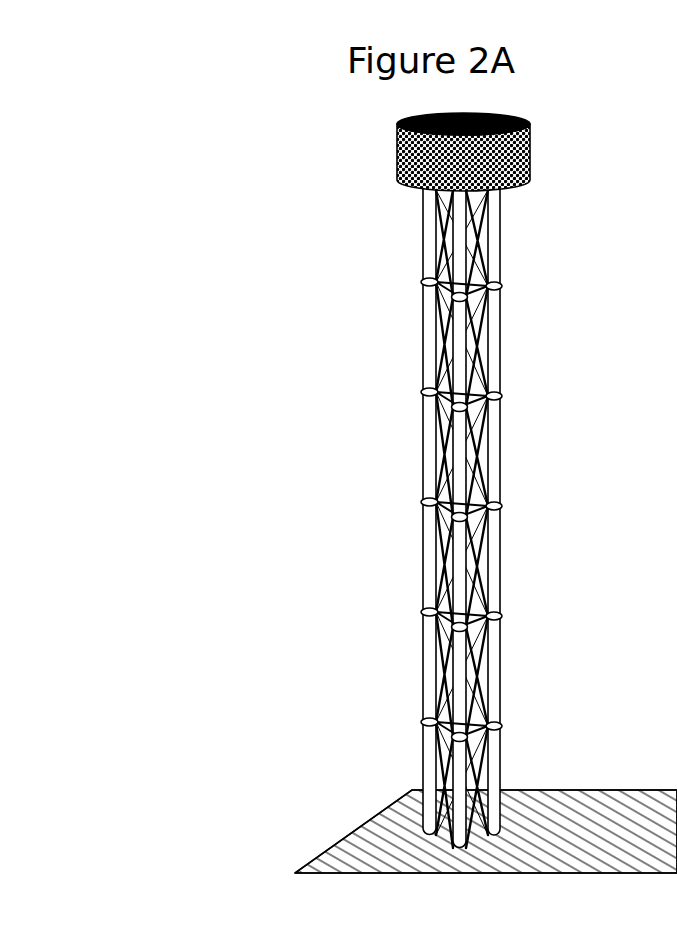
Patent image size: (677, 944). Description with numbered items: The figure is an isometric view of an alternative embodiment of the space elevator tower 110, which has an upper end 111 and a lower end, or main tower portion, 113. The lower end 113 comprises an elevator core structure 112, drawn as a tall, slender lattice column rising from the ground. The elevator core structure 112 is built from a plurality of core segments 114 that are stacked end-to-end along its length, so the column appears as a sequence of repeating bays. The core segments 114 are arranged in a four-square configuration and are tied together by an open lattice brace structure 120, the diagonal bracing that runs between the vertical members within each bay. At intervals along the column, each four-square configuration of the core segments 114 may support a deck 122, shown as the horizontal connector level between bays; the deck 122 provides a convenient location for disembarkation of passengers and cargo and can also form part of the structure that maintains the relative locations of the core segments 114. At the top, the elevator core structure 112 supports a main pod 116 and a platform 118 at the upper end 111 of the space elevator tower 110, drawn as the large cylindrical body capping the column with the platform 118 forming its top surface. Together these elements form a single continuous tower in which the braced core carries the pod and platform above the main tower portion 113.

The space elevator tower 110 is at (303, 105).
The upper end 111 is at (366, 111).
The elevator core structure 112 is at (508, 338).
The lower end 113 is at (372, 828).
The core segments 114 is at (502, 255).
The main pod 116 is at (480, 162).
The platform 118 is at (508, 120).
The open lattice brace structure 120 is at (480, 557).
The deck 122 is at (473, 612).